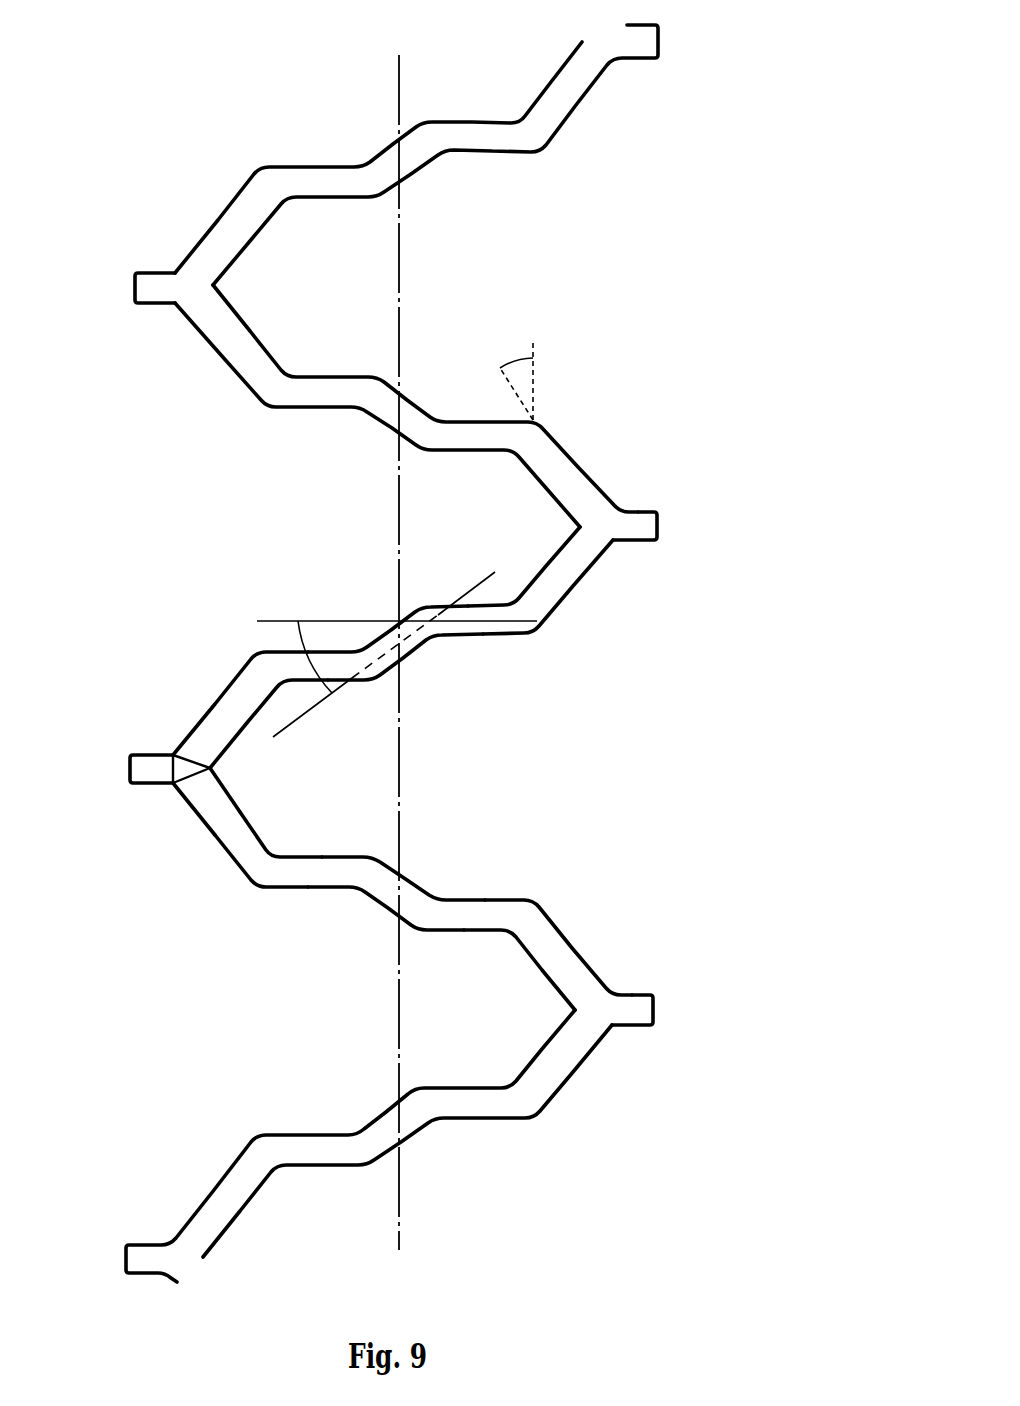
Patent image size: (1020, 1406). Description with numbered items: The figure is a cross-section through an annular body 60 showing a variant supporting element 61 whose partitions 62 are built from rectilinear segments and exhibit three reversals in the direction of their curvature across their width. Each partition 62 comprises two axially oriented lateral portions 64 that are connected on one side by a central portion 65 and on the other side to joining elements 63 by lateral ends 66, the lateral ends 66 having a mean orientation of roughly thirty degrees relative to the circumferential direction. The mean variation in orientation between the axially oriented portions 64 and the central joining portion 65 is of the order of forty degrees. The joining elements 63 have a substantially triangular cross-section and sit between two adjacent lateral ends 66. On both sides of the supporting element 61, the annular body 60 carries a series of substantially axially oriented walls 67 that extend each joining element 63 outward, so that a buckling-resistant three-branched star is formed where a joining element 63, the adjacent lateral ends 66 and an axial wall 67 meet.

The annular body 60 is at (200, 535).
The supporting element 61 is at (602, 433).
The partitions 62 is at (372, 583).
The joining elements 63 is at (177, 758).
The axially oriented lateral portions 64 is at (317, 870).
The central portion 65 is at (397, 892).
The lateral ends 66 is at (212, 809).
The axially oriented walls 67 is at (633, 520).